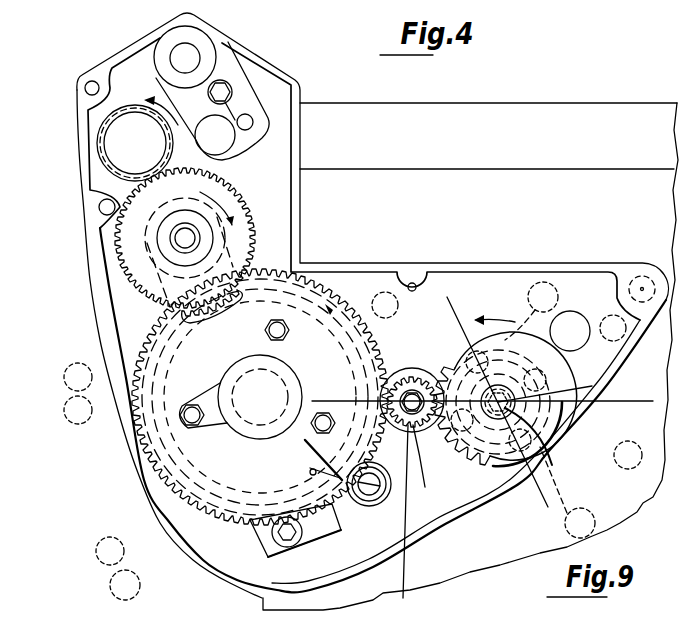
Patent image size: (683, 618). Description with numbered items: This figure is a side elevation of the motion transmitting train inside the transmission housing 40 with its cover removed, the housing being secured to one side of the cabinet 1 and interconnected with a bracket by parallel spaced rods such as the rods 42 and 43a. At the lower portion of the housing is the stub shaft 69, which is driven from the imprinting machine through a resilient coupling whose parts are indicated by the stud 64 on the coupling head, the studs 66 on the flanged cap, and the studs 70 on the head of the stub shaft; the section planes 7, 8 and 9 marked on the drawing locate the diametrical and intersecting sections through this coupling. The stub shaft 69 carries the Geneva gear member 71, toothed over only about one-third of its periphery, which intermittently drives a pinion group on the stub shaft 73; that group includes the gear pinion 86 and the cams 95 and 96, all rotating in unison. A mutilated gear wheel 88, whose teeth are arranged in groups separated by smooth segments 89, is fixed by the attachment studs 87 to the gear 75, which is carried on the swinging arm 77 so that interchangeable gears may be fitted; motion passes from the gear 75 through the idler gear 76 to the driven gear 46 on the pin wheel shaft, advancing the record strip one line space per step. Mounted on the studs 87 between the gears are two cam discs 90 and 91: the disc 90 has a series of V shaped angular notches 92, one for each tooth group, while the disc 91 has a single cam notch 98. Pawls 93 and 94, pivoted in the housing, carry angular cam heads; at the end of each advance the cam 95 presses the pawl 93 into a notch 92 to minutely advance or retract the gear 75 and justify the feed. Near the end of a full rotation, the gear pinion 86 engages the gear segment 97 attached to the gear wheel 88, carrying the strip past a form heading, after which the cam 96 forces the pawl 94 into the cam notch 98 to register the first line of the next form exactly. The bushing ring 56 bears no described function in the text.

The cabinet 1 is at (632, 500).
The transmission housing 40 is at (427, 507).
The rod 42 is at (188, 50).
The rod 43a is at (100, 208).
The driven gear 46 is at (180, 150).
The bearing bushing 56 is at (117, 153).
The stud 64 is at (583, 442).
The stud 66 is at (550, 410).
The stub shaft 69 is at (512, 410).
The stud 70 is at (588, 331).
The gear member 71 is at (508, 462).
The stub shaft 73 is at (408, 521).
The gear 75 is at (242, 283).
The idler gear 76 is at (132, 257).
The swinging arm 77 is at (260, 552).
The gear pinion 86 is at (429, 465).
The attachment studs 87 is at (267, 333).
The mutilated gear wheel 88 is at (153, 443).
The smooth segment 89 is at (320, 285).
The cam disc 90 is at (175, 398).
The cam disc 91 is at (217, 493).
The angular notch 92 is at (175, 365).
The pawl 93 is at (398, 352).
The pawl 94 is at (368, 506).
The cam 95 is at (412, 376).
The cam 96 is at (442, 437).
The gear segment 97 is at (242, 463).
The cam notch 98 is at (235, 497).
The section plane 7— 7 is at (443, 308).
The section planes 8— 8 is at (460, 310).
The section plane 9— 9 is at (322, 394).